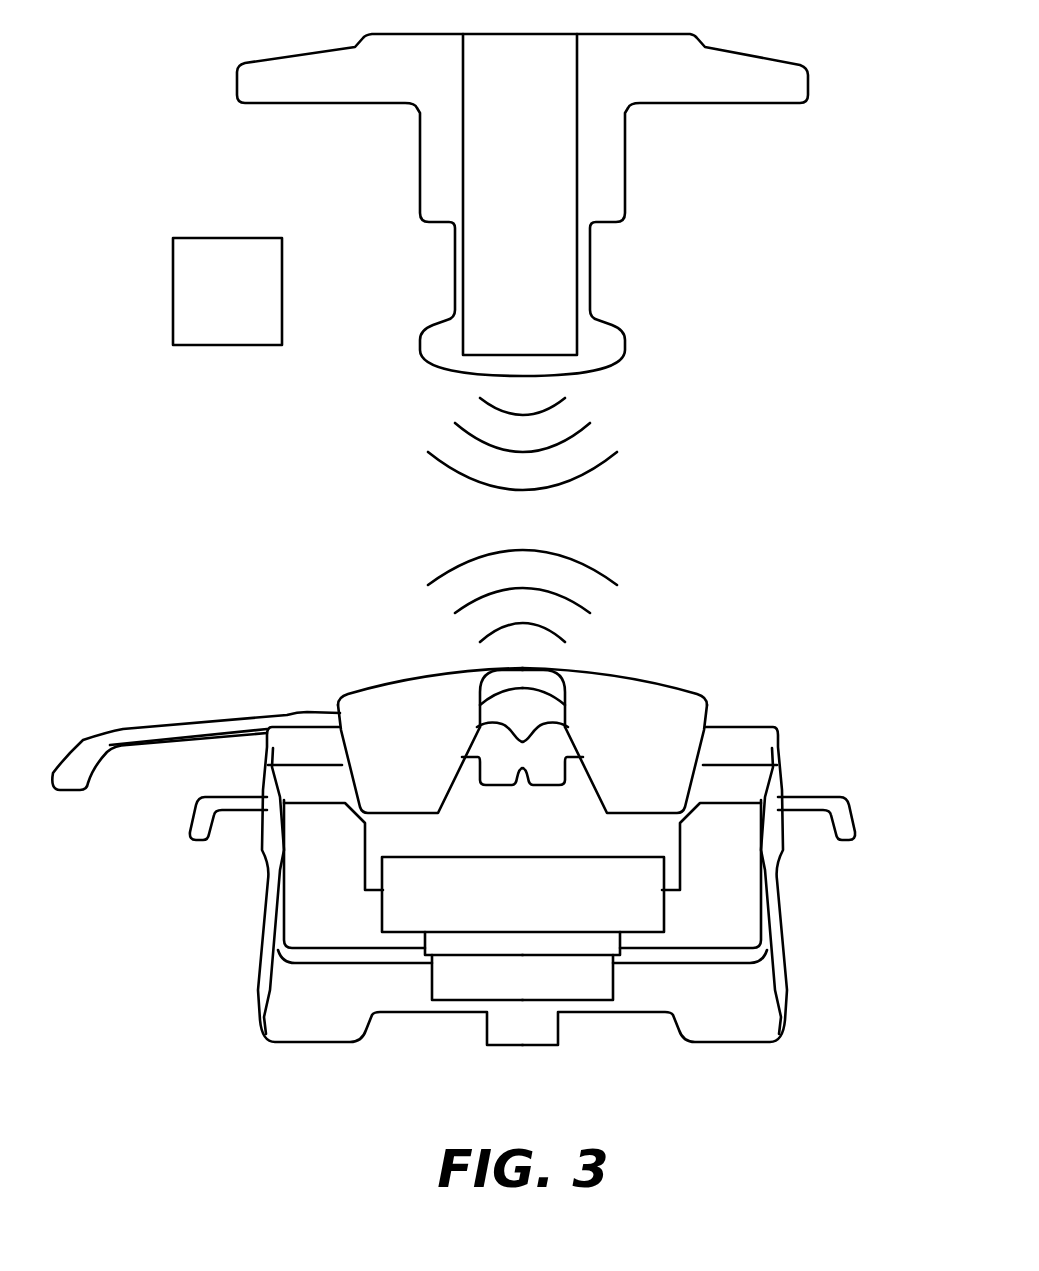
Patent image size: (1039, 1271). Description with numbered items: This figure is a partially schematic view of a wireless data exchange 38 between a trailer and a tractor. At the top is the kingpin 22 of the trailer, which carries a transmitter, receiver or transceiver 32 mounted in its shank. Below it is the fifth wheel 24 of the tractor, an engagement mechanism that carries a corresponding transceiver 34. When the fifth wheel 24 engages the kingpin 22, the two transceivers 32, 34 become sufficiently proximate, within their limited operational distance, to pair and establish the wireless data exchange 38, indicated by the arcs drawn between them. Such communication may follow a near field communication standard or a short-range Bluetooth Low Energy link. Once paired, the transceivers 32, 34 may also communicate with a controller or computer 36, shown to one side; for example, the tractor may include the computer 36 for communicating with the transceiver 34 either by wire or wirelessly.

The kingpin 22 is at (403, 227).
The fifth wheel 24 is at (247, 885).
The transceiver 32 is at (590, 258).
The transceiver 34 is at (635, 928).
The controller or computer 36 is at (173, 277).
The wireless data exchange 38 is at (605, 463).